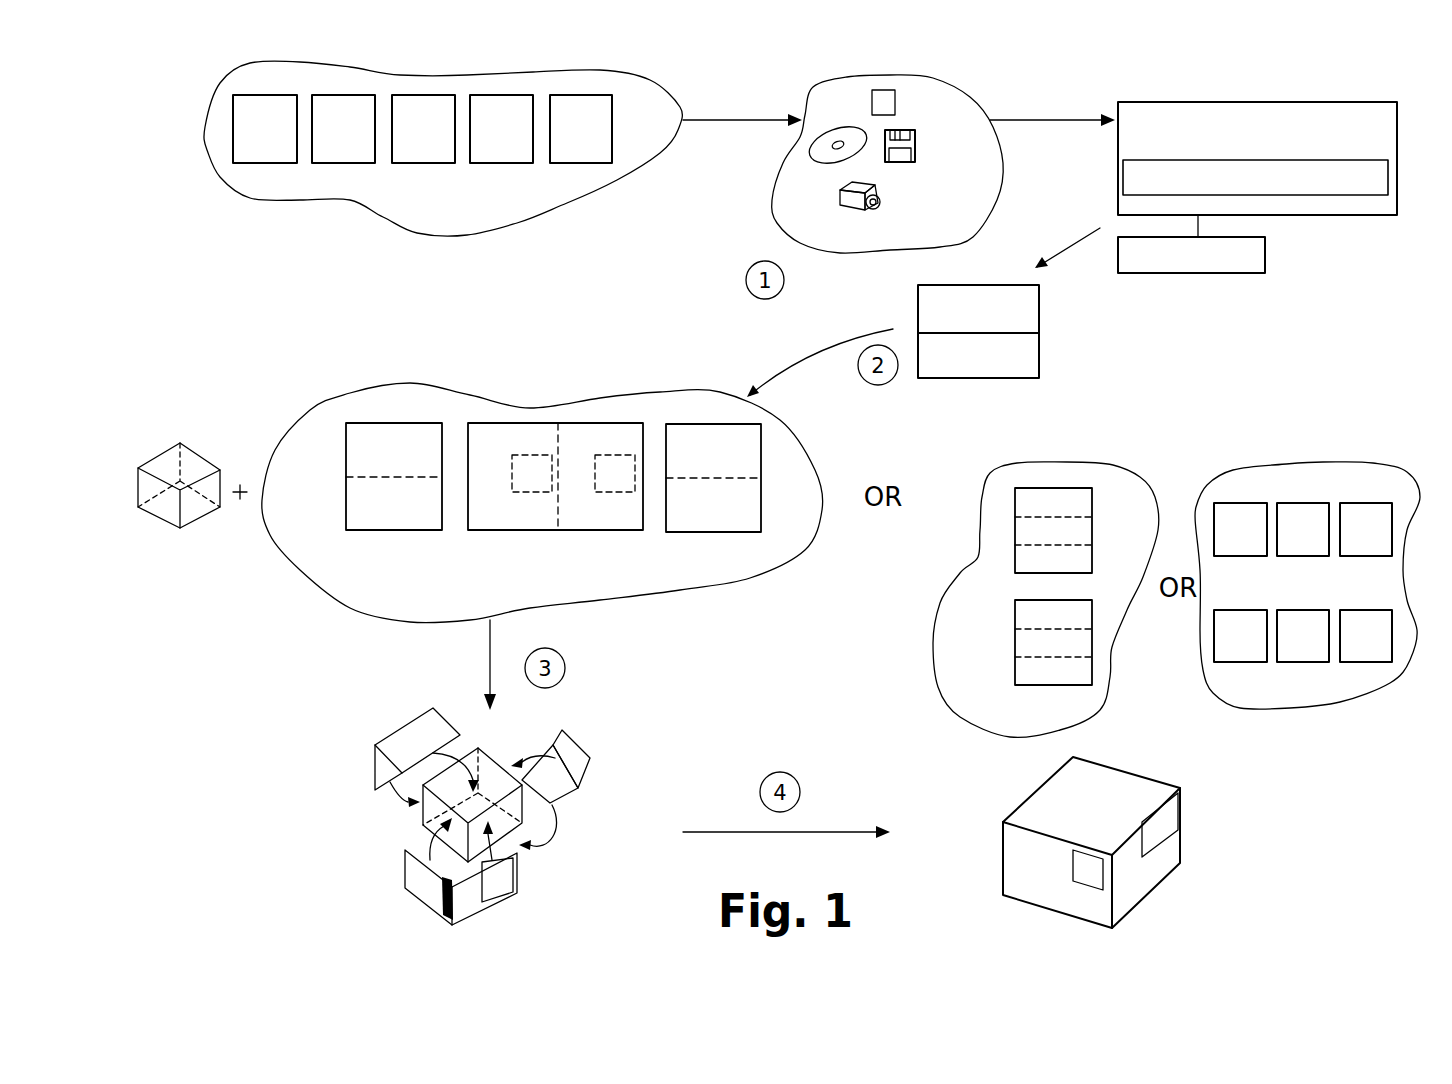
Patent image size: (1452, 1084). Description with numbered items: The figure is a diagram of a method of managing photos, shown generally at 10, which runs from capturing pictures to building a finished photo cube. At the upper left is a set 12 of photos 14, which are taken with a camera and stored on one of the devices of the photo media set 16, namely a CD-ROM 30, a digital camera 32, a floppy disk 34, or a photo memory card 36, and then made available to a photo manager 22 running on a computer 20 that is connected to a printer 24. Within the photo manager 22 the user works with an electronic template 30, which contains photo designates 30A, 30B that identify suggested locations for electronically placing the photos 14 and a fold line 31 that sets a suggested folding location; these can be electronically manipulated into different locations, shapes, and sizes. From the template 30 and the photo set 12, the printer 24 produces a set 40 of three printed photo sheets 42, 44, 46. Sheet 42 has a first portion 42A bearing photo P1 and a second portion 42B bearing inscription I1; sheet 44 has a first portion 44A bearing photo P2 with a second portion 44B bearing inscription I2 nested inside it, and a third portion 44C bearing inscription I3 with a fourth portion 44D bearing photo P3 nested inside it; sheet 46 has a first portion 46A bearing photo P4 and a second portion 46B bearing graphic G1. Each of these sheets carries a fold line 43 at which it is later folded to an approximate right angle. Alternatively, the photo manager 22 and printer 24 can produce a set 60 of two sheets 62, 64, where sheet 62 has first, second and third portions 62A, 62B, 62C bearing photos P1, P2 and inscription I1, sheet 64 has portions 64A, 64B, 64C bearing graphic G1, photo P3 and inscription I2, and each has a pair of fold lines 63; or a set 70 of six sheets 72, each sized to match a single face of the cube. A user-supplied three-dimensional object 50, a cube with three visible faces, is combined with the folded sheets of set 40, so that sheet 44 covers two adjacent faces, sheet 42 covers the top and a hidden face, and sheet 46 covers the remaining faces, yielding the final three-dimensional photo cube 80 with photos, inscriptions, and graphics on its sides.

The method for managing photos 10 is at (256, 293).
The set of photos 12 is at (443, 172).
The photos 14 is at (268, 163).
The photo media set 16 is at (905, 182).
The computer 20 is at (1278, 140).
The photo manager 22 is at (1390, 175).
The printer 24 is at (1265, 250).
The template 30 is at (822, 163).
The photo designate 30A is at (1039, 305).
The photo designate 30B is at (1039, 365).
The fold line 31 is at (1034, 336).
The digital camera 32 is at (852, 210).
The floppy disk 34 is at (916, 145).
The photo memory card 36 is at (895, 100).
The set of printed photo sheets 40 is at (478, 398).
The sheet 42 is at (442, 432).
The first portion 42A is at (346, 466).
The second portion 42B is at (346, 522).
The fold line 43 is at (358, 479).
The sheet 44 is at (623, 423).
The first portion 44A is at (506, 532).
The second portion 44B is at (530, 455).
The third portion 44C is at (575, 532).
The fourth portion 44D is at (612, 495).
The sheet 46 is at (762, 453).
The first portion 46A is at (693, 430).
The second portion 46B is at (752, 506).
The three-dimensional object 50 is at (194, 454).
The set of two photo sheets 60 is at (1112, 467).
The sheet 62 is at (1092, 530).
The first portion 62A is at (1015, 503).
The second portion 62B is at (1015, 531).
The third portion 62C is at (1015, 563).
The fold lines 63 is at (1070, 545).
The sheet 64 is at (1092, 608).
The first portion 64A is at (1015, 615).
The second portion 64B is at (1015, 644).
The third portion 64C is at (1015, 672).
The set of six printed photo sheets 70 is at (1300, 462).
The sheet 72 is at (1355, 503).
The three-dimensional photo cube 80 is at (1157, 775).